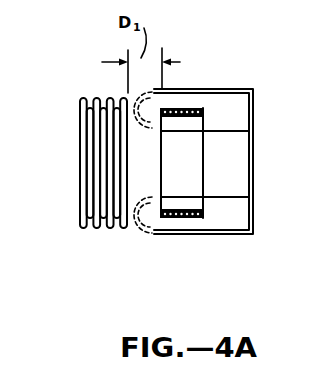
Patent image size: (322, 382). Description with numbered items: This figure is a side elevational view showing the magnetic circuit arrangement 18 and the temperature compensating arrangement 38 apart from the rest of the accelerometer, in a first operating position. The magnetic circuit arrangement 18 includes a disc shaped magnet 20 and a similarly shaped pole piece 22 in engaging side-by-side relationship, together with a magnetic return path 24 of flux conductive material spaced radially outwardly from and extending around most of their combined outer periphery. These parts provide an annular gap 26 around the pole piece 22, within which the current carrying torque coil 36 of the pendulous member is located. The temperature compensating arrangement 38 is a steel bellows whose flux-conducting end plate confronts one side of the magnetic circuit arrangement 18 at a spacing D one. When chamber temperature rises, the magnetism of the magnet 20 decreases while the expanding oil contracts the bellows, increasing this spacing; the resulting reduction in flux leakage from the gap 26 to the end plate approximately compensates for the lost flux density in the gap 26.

The magnetic circuit arrangement 18 is at (246, 82).
The magnet 20 is at (237, 161).
The pole piece 22 is at (195, 183).
The magnetic return path 24 is at (249, 118).
The annular gap 26 is at (183, 223).
The torque coil 36 is at (183, 107).
The temperature compensating arrangement 38 is at (80, 94).